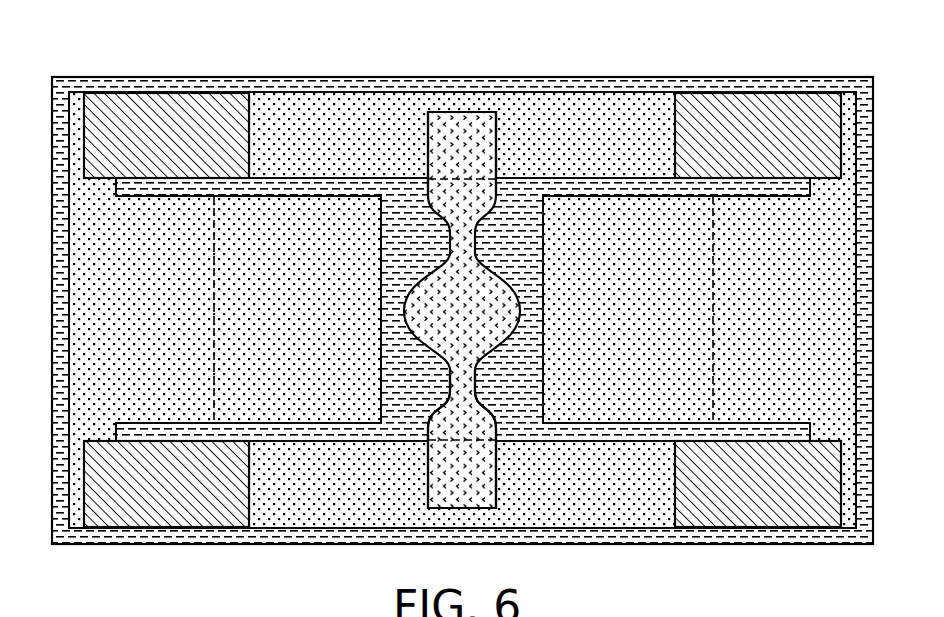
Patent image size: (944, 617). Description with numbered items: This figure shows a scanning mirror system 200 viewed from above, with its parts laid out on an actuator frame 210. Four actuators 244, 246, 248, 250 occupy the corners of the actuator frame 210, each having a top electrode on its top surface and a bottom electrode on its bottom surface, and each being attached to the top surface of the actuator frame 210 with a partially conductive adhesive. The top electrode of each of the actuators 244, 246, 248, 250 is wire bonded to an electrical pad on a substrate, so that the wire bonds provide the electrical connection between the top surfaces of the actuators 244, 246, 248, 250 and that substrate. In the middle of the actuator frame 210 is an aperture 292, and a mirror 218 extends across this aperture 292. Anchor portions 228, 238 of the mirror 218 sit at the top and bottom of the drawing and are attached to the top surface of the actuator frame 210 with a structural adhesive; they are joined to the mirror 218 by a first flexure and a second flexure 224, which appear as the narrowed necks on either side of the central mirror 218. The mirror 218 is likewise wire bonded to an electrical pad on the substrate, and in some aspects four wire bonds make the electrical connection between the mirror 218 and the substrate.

The scanning mirror system 200 is at (146, 41).
The actuator frame 210 is at (820, 400).
The mirror 218 is at (500, 302).
The second flexure 224 is at (446, 380).
The anchor portion 228 is at (450, 110).
The anchor portion 238 is at (458, 494).
The actuator 244 is at (223, 92).
The actuator 246 is at (785, 92).
The actuator 248 is at (157, 513).
The actuator 250 is at (712, 512).
The aperture 292 is at (520, 376).